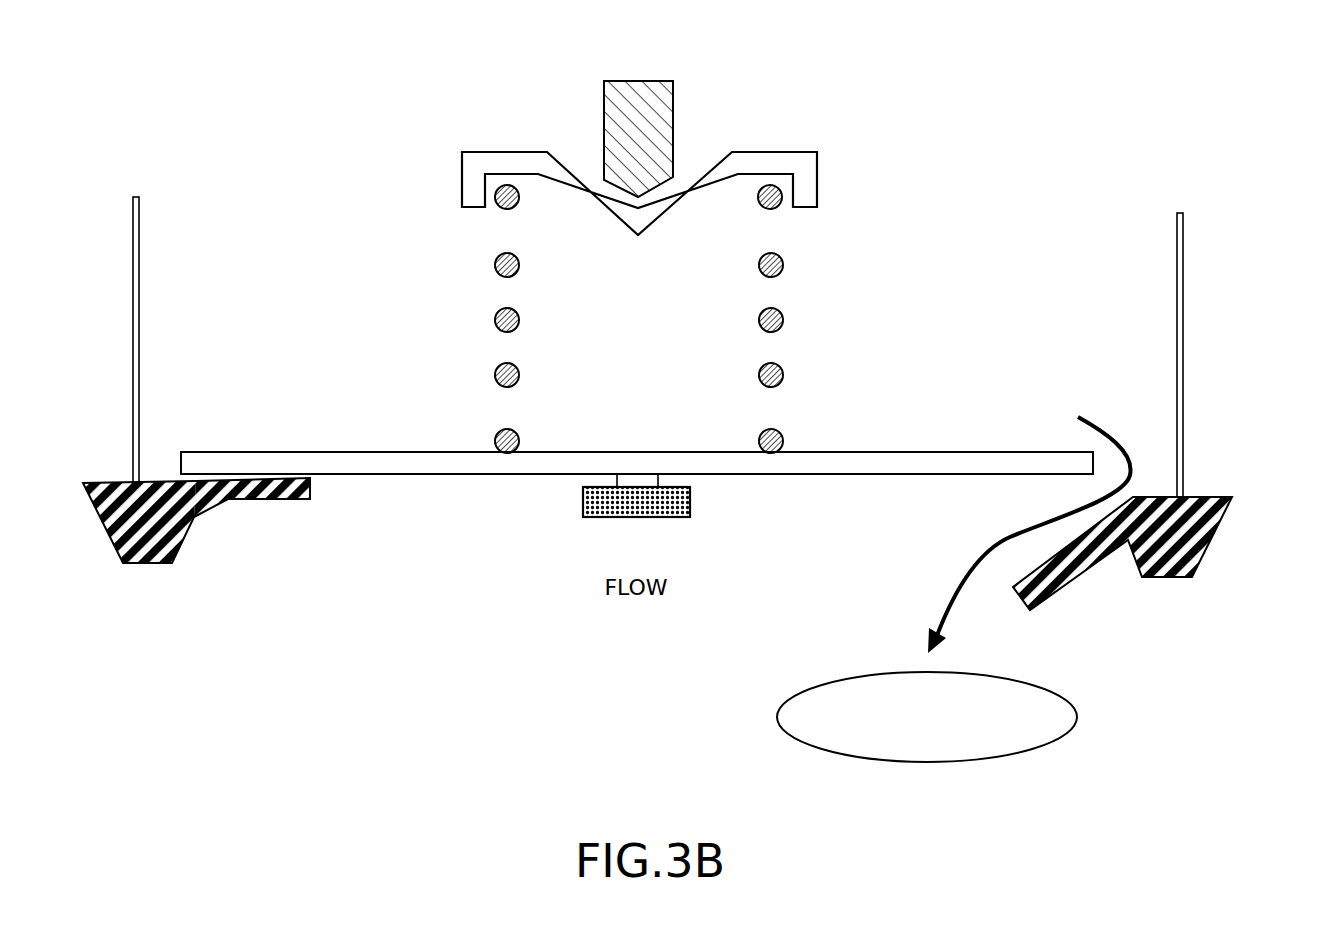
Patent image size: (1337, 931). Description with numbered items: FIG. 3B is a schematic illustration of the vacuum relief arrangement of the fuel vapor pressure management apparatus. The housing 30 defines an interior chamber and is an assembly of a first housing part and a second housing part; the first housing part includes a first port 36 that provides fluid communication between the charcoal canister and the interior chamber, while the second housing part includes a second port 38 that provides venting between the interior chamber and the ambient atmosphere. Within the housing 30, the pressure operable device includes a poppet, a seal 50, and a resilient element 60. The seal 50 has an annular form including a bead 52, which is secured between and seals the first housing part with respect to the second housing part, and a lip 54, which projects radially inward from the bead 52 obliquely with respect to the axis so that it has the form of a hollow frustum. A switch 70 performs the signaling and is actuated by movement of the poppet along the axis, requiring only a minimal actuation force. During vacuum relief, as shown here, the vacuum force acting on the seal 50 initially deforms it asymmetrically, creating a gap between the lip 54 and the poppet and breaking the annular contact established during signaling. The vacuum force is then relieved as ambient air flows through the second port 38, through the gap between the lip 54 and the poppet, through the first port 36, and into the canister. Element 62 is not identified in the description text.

The housing 30 is at (1183, 333).
The first port 36 is at (740, 668).
The second port 38 is at (773, 59).
The seal 50 is at (1207, 558).
The bead 52 is at (157, 557).
The lip 54 is at (274, 497).
The resilient element 60 is at (783, 258).
The plunger 62 is at (672, 110).
The switch 70 is at (683, 502).